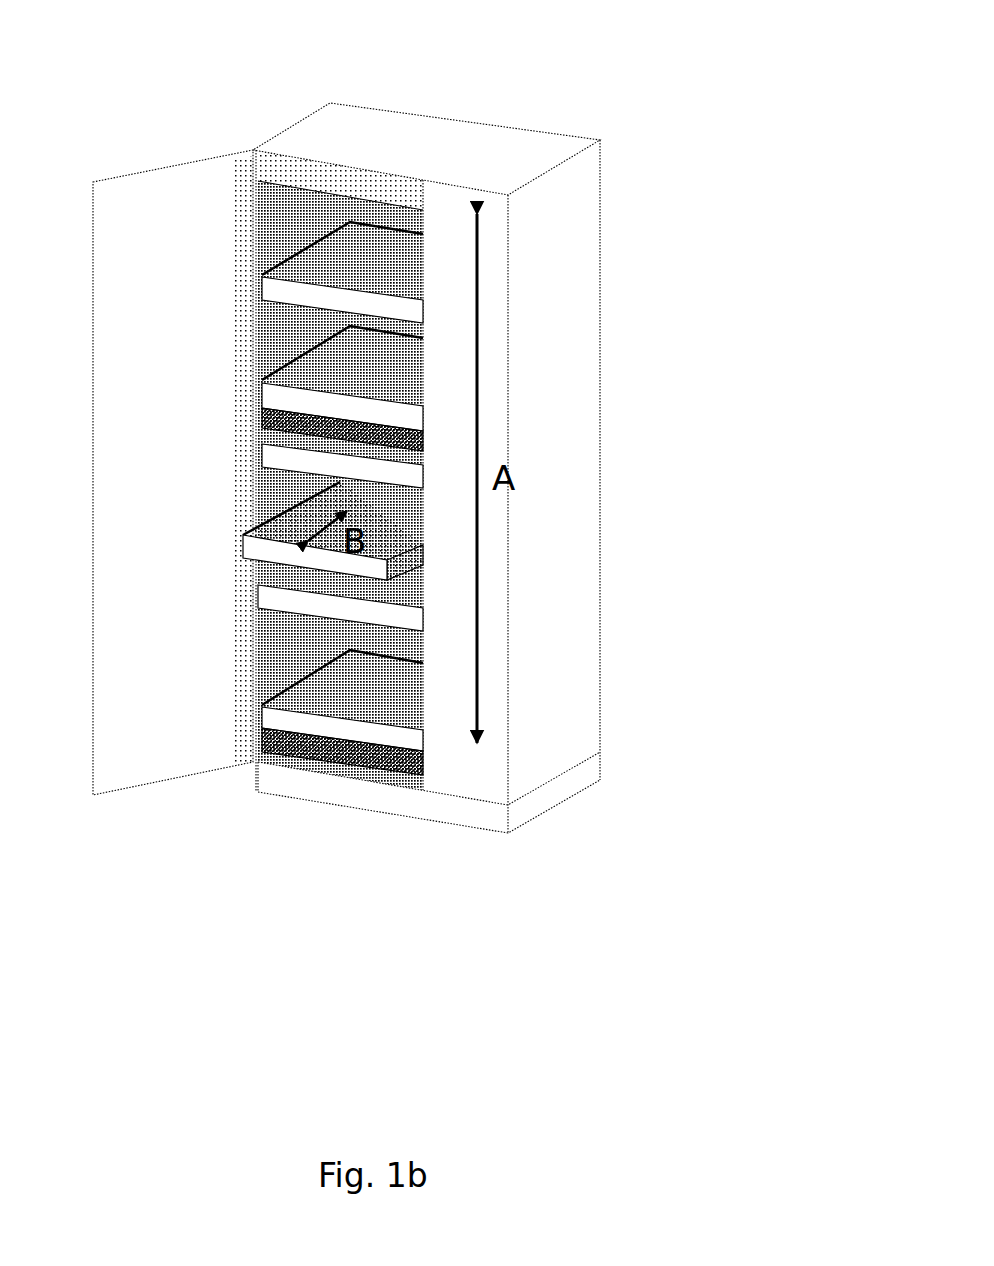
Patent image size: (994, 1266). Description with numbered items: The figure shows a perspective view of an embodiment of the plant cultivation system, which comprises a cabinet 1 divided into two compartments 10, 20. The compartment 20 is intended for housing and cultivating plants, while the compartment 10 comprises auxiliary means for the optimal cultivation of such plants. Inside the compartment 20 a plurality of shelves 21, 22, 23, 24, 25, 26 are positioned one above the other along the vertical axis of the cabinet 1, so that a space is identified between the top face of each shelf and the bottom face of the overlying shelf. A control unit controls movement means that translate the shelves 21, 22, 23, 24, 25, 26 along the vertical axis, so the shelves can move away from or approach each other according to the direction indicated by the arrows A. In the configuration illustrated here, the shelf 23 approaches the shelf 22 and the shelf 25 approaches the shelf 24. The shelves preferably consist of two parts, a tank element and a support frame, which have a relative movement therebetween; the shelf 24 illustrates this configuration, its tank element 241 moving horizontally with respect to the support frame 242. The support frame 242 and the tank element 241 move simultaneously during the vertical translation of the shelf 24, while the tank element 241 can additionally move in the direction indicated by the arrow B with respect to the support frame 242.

The cabinet 1 is at (636, 360).
The compartment 10 is at (482, 160).
The compartment 20 is at (353, 142).
The shelf 21 is at (263, 288).
The shelf 22 is at (263, 395).
The shelf 23 is at (263, 433).
The shelf 24 is at (369, 596).
The shelf 25 is at (263, 597).
The shelf 26 is at (263, 708).
The tank element 241 is at (327, 563).
The support frame 242 is at (436, 553).